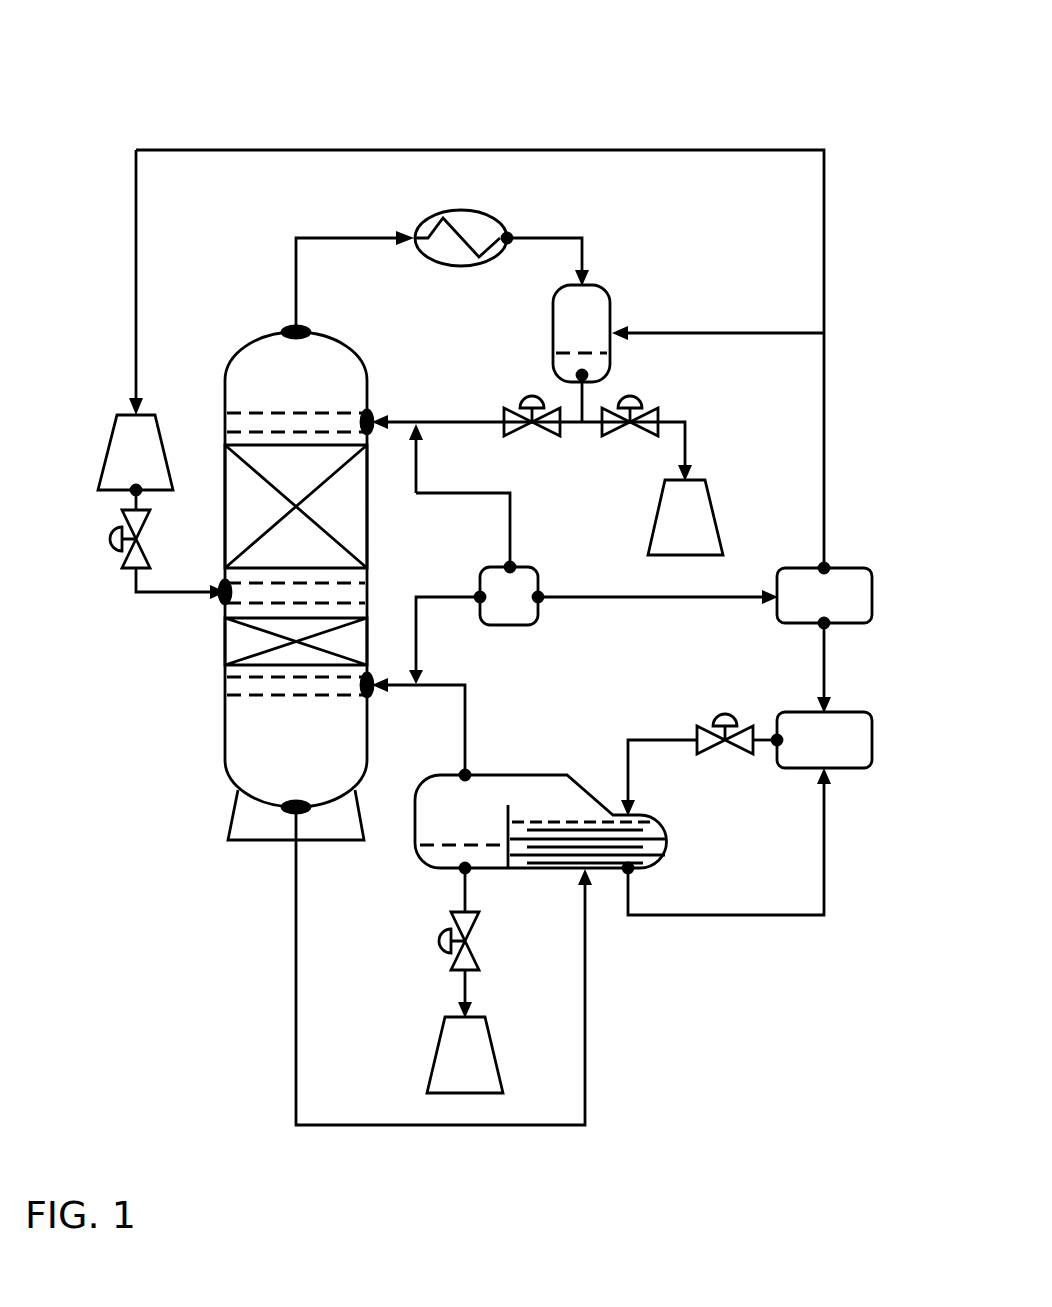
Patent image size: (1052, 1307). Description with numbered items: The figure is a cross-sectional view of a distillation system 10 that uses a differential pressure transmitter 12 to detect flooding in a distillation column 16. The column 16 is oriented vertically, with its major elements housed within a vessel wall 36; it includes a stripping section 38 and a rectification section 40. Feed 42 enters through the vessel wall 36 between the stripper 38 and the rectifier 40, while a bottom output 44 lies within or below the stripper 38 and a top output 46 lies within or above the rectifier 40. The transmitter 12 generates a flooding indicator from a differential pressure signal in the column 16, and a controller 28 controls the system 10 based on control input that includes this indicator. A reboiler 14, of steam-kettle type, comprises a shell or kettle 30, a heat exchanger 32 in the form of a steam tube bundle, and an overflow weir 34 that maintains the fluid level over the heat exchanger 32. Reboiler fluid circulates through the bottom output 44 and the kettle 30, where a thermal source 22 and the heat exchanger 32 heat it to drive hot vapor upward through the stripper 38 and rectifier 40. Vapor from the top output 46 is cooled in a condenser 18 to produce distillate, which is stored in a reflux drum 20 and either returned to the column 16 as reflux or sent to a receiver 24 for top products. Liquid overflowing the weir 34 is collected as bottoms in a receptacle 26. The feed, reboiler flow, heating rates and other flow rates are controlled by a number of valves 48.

The distillation system 10 is at (64, 70).
The differential pressure transmitter 12 is at (530, 568).
The reboiler 14 is at (548, 797).
The distillation column 16 is at (273, 544).
The condenser 18 is at (430, 216).
The reflux drum 20 is at (606, 292).
The thermal source 22 is at (857, 712).
The receiver 24 is at (709, 492).
The receptacle 26 is at (442, 1032).
The controller 28 is at (857, 567).
The shell 30 is at (445, 773).
The heat exchanger 32 is at (645, 813).
The overflow weir 34 is at (490, 823).
The vessel wall 36 is at (230, 358).
The stripping section 38 is at (237, 634).
The rectification section 40 is at (238, 503).
The feed 42 is at (111, 432).
The bottom output 44 is at (293, 804).
The top output 46 is at (302, 330).
The valves 48 is at (522, 394).